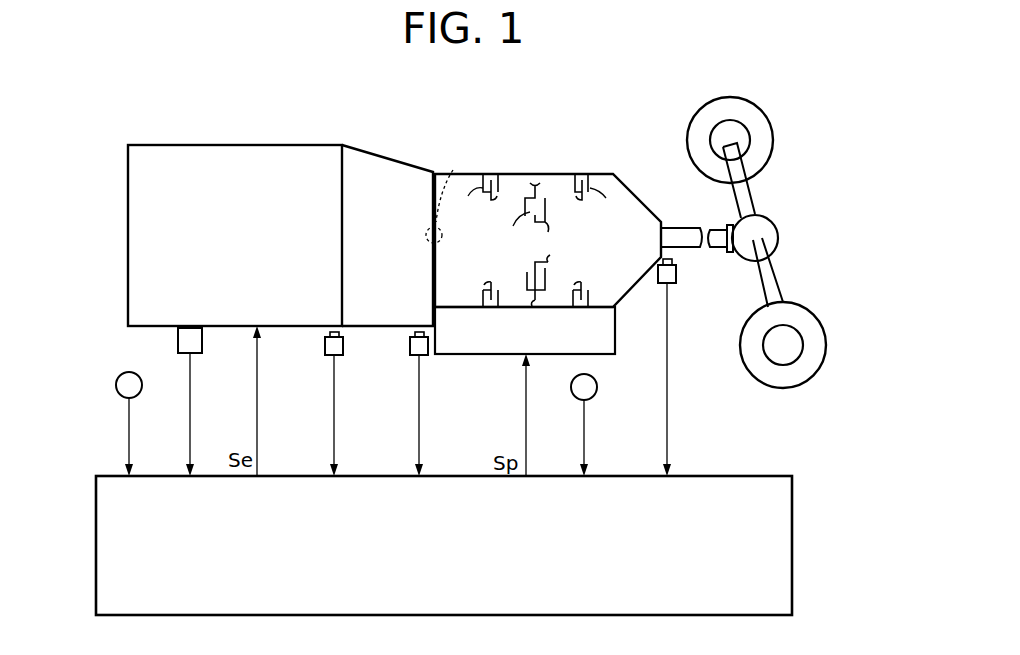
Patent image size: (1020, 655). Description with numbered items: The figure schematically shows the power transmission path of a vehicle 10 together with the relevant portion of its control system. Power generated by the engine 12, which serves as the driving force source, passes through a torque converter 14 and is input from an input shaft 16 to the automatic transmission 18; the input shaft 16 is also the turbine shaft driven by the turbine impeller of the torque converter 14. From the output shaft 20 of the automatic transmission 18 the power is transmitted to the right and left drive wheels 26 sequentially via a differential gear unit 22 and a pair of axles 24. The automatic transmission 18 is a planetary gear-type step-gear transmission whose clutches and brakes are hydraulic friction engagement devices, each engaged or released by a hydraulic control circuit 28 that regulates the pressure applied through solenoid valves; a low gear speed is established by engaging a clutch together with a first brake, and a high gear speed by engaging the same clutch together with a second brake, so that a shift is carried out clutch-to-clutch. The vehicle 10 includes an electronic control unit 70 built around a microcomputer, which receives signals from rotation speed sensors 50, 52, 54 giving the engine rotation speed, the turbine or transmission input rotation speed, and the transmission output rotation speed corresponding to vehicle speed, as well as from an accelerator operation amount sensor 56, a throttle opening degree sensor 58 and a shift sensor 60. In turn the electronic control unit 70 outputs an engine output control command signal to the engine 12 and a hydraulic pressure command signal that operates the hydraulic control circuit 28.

The vehicle 10 is at (602, 102).
The engine 12 is at (209, 155).
The torque converter 14 is at (402, 177).
The input shaft 16 is at (448, 189).
The automatic transmission 18 is at (554, 184).
The output shaft 20 is at (680, 233).
The differential gear unit 22 is at (768, 232).
The axles 24 is at (743, 197).
The drive wheels 26 is at (745, 113).
The hydraulic control circuit 28 is at (452, 358).
The rotation speed sensor 50 is at (325, 345).
The rotation speed sensor 52 is at (410, 345).
The rotation speed sensor 54 is at (677, 272).
The accelerator operation amount sensor 56 is at (118, 378).
The throttle opening degree sensor 58 is at (193, 343).
The shift sensor 60 is at (578, 378).
The electronic control unit 70 is at (732, 483).